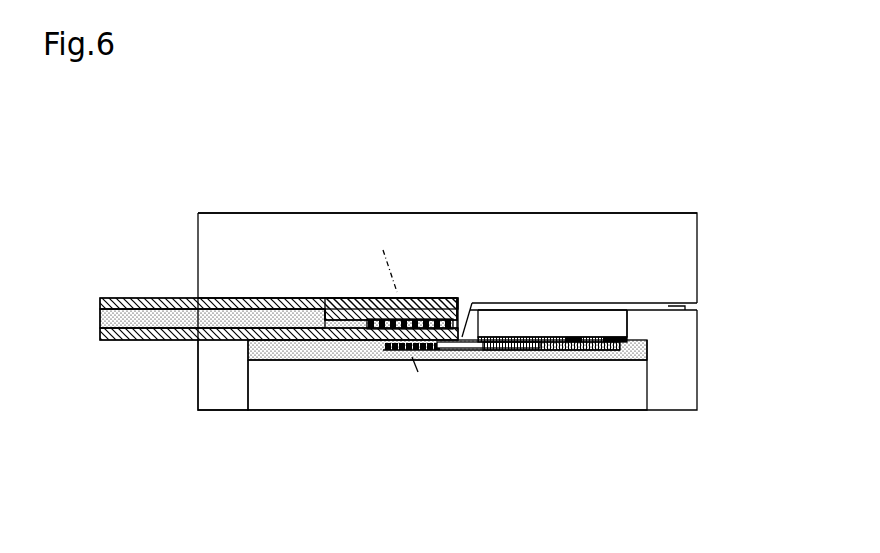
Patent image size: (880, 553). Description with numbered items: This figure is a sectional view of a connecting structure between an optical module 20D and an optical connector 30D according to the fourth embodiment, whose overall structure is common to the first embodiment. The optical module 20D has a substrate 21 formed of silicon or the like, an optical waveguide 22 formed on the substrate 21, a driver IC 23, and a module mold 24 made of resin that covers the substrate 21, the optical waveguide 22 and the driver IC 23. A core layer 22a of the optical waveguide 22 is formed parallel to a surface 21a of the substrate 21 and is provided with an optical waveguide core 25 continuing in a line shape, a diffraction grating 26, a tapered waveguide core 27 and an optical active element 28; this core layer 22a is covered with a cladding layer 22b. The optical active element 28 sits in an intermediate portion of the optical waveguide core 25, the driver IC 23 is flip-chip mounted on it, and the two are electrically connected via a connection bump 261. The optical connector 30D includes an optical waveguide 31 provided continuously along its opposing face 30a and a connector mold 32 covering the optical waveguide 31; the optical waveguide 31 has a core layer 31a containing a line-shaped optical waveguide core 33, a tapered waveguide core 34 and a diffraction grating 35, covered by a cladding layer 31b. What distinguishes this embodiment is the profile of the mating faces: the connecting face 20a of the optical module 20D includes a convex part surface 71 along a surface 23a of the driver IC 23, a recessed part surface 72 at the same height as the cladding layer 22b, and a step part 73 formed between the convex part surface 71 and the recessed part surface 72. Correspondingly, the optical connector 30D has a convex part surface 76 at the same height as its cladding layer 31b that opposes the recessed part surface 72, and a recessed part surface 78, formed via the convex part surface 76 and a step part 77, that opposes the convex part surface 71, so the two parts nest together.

The optical module 20D is at (700, 393).
The optical connector 30D is at (700, 241).
The connector mold 32 is at (282, 233).
The module mold 24 is at (198, 372).
The substrate 21 is at (268, 395).
The optical waveguide 31 is at (133, 250).
The core layer 31a is at (100, 317).
The cladding layer 31b is at (122, 303).
The optical waveguide core 33 is at (160, 318).
The tapered waveguide core 34 is at (351, 322).
The recessed part surface 72 is at (262, 302).
The diffraction grating 35 is at (423, 300).
The step part 73 is at (458, 328).
The optical waveguide 22 is at (590, 455).
The core layer 22a is at (478, 352).
The cladding layer 22b is at (508, 352).
The surface 21a is at (640, 347).
The convex part surface 76 is at (317, 352).
The diffraction grating 26 is at (384, 355).
The tapered waveguide core 27 is at (448, 352).
The optical waveguide core 25 is at (473, 348).
The optical active element 28 is at (533, 353).
The opposing face 30a is at (668, 311).
The connecting face 20a is at (685, 305).
The step part 77 is at (462, 333).
The driver IC 23 is at (548, 317).
The convex part surface 71 is at (520, 305).
The surface 23a is at (575, 337).
The connection bump 261 is at (615, 337).
The recessed part surface 78 is at (653, 313).